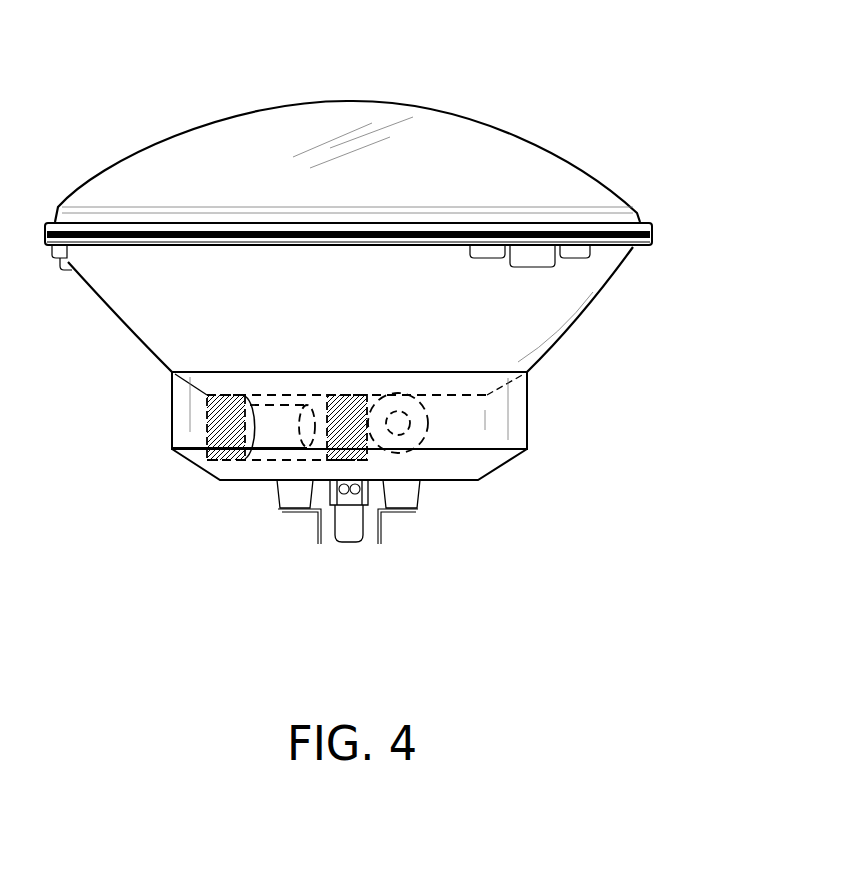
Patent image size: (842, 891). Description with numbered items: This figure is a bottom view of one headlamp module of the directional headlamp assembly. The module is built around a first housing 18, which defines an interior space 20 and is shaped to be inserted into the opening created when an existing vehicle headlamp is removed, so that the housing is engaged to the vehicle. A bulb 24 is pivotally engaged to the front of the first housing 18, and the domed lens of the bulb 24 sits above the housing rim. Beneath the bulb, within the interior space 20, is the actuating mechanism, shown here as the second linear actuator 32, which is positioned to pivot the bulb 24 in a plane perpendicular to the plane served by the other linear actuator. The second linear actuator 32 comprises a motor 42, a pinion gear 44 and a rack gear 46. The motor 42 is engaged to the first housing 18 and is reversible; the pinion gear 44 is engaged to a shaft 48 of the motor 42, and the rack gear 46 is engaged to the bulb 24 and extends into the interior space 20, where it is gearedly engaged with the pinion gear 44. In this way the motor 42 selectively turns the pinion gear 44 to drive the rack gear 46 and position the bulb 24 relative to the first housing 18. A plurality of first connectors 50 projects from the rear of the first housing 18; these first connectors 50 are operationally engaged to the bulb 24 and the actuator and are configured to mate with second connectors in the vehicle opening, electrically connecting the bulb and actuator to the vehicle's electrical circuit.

The first housing 18 is at (193, 467).
The interior space 20 is at (313, 397).
The bulb 24 is at (362, 100).
The second linear actuator 32 is at (350, 392).
The motor 42 is at (280, 437).
The pinion gear 44 is at (427, 438).
The rack gear 46 is at (350, 440).
The shaft 48 is at (407, 422).
The first connectors 50 is at (374, 549).